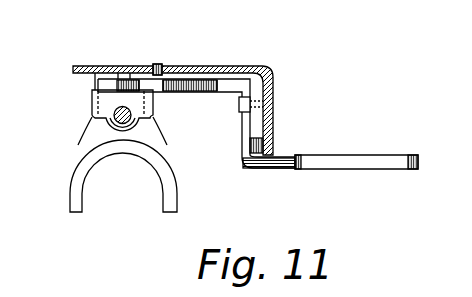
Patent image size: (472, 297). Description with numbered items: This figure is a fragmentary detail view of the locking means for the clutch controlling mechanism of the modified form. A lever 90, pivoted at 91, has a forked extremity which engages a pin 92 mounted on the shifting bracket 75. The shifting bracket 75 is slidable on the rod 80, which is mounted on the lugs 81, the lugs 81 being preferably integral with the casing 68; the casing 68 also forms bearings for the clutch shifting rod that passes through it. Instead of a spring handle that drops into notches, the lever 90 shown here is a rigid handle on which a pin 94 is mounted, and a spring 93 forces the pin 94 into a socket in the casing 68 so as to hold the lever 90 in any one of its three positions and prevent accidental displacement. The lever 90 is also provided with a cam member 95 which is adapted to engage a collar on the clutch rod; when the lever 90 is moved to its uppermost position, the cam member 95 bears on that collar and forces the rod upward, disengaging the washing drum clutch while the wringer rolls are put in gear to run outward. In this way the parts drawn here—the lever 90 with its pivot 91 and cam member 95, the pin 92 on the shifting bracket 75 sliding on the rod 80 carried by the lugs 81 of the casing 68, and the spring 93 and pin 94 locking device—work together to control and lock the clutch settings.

The casing 68 is at (256, 67).
The shifting bracket 75 is at (82, 200).
The rod 80 is at (104, 121).
The lugs 81 is at (95, 80).
The lever 90 is at (361, 156).
The pivot 91 is at (158, 66).
The pin 92 is at (121, 67).
The spring 93 is at (249, 111).
The pin 94 is at (275, 131).
The cam member 95 is at (197, 80).